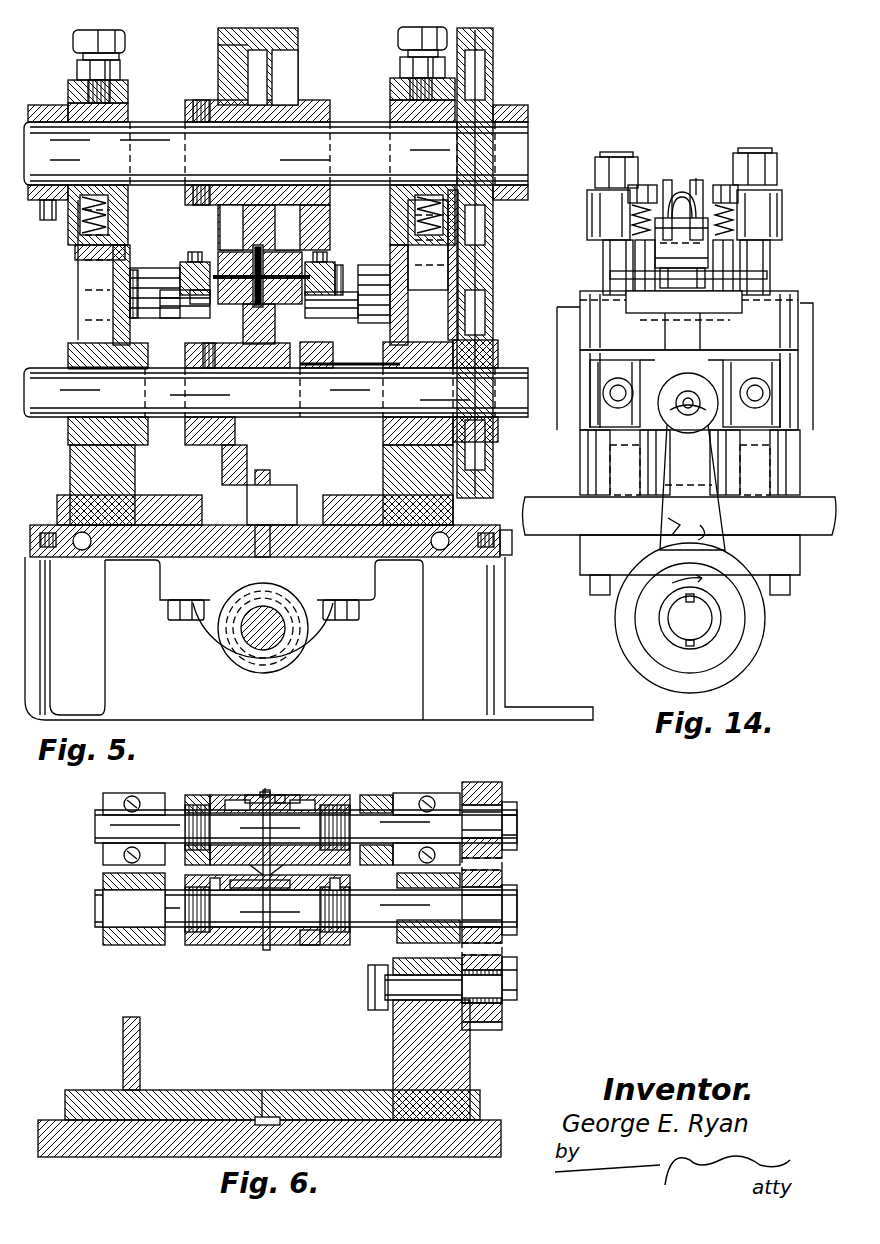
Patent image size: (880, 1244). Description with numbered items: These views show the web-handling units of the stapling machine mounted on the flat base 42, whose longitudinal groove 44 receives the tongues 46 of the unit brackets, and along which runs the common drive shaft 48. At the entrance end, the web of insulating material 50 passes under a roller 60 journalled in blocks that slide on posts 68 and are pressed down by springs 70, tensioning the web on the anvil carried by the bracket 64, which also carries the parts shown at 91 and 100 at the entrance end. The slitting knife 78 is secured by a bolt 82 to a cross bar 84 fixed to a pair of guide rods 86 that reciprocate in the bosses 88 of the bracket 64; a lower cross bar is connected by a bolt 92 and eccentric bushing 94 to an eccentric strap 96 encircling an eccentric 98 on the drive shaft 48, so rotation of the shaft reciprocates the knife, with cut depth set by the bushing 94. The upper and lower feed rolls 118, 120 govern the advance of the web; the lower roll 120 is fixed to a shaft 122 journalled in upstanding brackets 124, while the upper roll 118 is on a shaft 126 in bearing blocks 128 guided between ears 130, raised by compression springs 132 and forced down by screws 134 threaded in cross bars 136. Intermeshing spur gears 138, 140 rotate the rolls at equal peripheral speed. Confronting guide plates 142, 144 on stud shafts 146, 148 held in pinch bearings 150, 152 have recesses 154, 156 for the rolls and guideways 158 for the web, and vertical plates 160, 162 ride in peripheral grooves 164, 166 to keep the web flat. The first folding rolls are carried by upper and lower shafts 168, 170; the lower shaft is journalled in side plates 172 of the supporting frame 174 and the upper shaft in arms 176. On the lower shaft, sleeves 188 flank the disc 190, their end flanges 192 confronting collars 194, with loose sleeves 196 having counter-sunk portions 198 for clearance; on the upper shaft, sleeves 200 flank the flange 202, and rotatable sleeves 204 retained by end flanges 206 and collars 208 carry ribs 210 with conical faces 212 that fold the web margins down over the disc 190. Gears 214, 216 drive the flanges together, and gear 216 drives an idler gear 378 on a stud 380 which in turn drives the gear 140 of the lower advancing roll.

In FIG. 5, the base 42 is at (200, 548).
In FIG. 14, the base 42 is at (558, 545).
In FIG. 6, the base 42 is at (160, 1142).
In FIG. 14, the longitudinal groove 44 is at (720, 535).
In FIG. 6, the longitudinal groove 44 is at (262, 1117).
In FIG. 14, the tongue 46 is at (662, 533).
In FIG. 6, the tongue 46 is at (268, 1115).
In FIG. 5, the drive shaft 48 is at (250, 636).
In FIG. 14, the drive shaft 48 is at (677, 626).
In FIG. 14, the web of insulating material 50 is at (700, 288).
In FIG. 14, the roller 60 is at (680, 265).
In FIG. 14, the bracket 64 is at (560, 330).
In FIG. 14, the post 68 is at (640, 170).
In FIG. 14, the spring 70 is at (632, 214).
In FIG. 14, the slitting knife 78 is at (697, 180).
In FIG. 14, the bolt 82 is at (681, 192).
In FIG. 14, the cross bar 84 is at (782, 220).
In FIG. 14, the guide rod 86 is at (605, 262).
In FIG. 14, the boss 88 is at (585, 472).
In FIG. 14, the bearing block 91 is at (780, 375).
In FIG. 14, the bolt 92 is at (692, 487).
In FIG. 14, the eccentric bushing 94 is at (672, 420).
In FIG. 14, the eccentric strap 96 is at (688, 442).
In FIG. 14, the eccentric 98 is at (735, 630).
In FIG. 14, the bar 100 is at (767, 272).
In FIG. 5, the upper feed roll 118 is at (298, 35).
In FIG. 5, the lower feed roll 120 is at (298, 490).
In FIG. 5, the shaft 122 is at (365, 418).
In FIG. 5, the upstanding bracket 124 is at (78, 458).
In FIG. 5, the shaft 126 is at (340, 118).
In FIG. 5, the bearing block 128 is at (128, 110).
In FIG. 5, the ear 130 is at (120, 212).
In FIG. 5, the compression spring 132 is at (82, 208).
In FIG. 5, the screw 134 is at (125, 38).
In FIG. 5, the cross bar 136 is at (130, 80).
In FIG. 5, the spur gear 138 is at (490, 45).
In FIG. 5, the spur gear 140 is at (490, 300).
In FIG. 5, the guide plate 142 is at (342, 262).
In FIG. 5, the guide plate 144 is at (180, 272).
In FIG. 5, the stud shaft 146 is at (338, 272).
In FIG. 5, the stud shaft 148 is at (170, 305).
In FIG. 5, the pinch bearing 150 is at (345, 290).
In FIG. 5, the pinch bearing 152 is at (140, 262).
In FIG. 5, the recess 154 is at (328, 262).
In FIG. 5, the recess 156 is at (210, 262).
In FIG. 5, the guideway 158 is at (230, 250).
In FIG. 5, the vertical plate 160 is at (280, 255).
In FIG. 5, the vertical plate 162 is at (235, 304).
In FIG. 5, the peripheral groove 164 is at (240, 45).
In FIG. 5, the peripheral groove 166 is at (262, 518).
In FIG. 6, the upper shaft 168 is at (120, 826).
In FIG. 6, the lower shaft 170 is at (120, 905).
In FIG. 6, the side plate 172 is at (115, 948).
In FIG. 6, the supporting frame 174 is at (345, 1090).
In FIG. 6, the arm 176 is at (150, 795).
In FIG. 6, the sleeve 188 is at (240, 945).
In FIG. 6, the disc 190 is at (266, 950).
In FIG. 6, the end flange 192 is at (310, 946).
In FIG. 6, the collar 194 is at (192, 945).
In FIG. 6, the sleeve 196 is at (235, 946).
In FIG. 6, the counter-sunk peripheral portion 198 is at (255, 888).
In FIG. 6, the sleeve 200 is at (298, 795).
In FIG. 6, the flange 202 is at (262, 795).
In FIG. 6, the sleeve 204 is at (300, 798).
In FIG. 6, the end flange 206 is at (232, 795).
In FIG. 6, the collar 208 is at (195, 793).
In FIG. 6, the peripheral rib 210 is at (268, 790).
In FIG. 6, the conical face 212 is at (262, 793).
In FIG. 6, the gear 214 is at (500, 790).
In FIG. 6, the gear 216 is at (504, 878).
In FIG. 6, the idler gear 378 is at (480, 1015).
In FIG. 6, the stud 380 is at (505, 975).